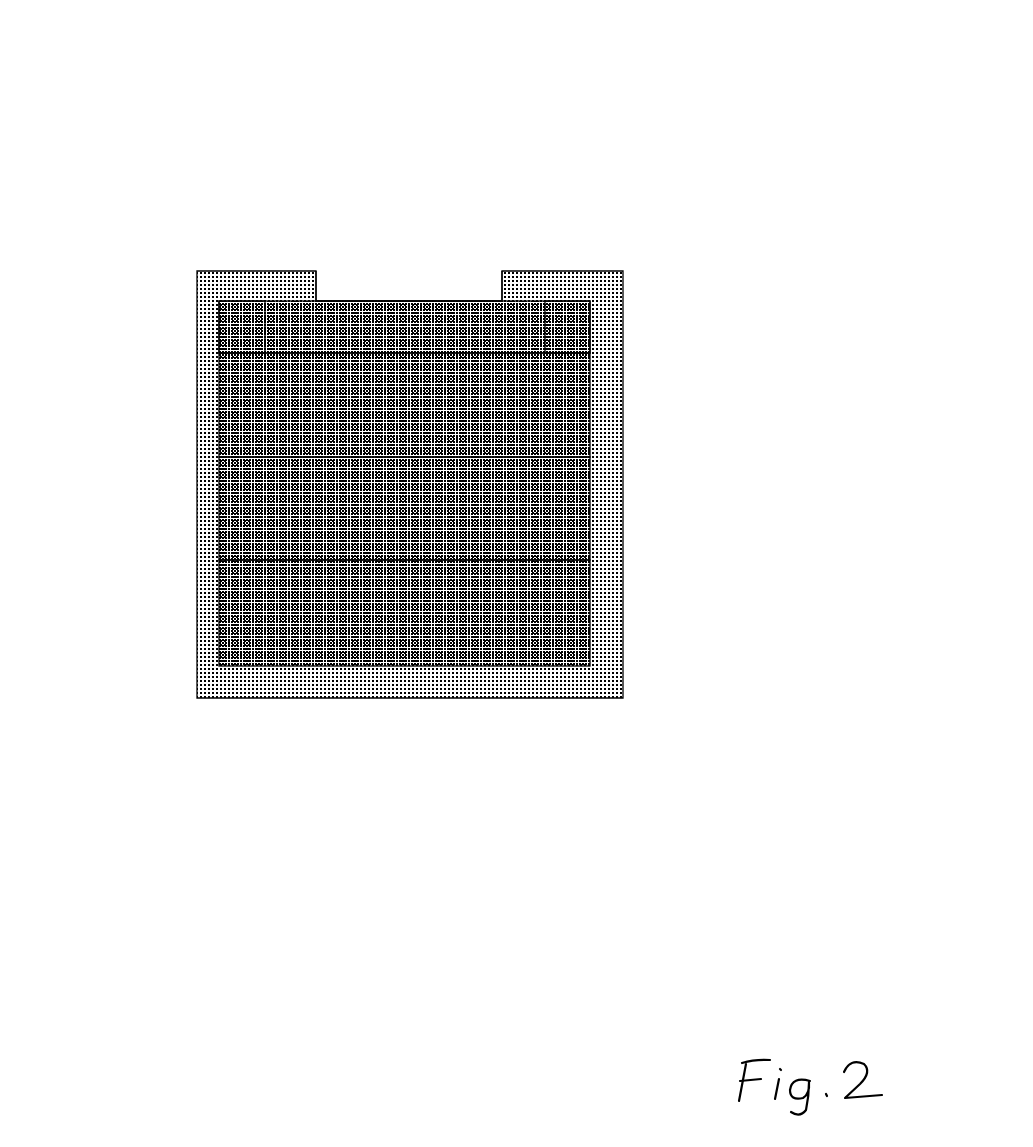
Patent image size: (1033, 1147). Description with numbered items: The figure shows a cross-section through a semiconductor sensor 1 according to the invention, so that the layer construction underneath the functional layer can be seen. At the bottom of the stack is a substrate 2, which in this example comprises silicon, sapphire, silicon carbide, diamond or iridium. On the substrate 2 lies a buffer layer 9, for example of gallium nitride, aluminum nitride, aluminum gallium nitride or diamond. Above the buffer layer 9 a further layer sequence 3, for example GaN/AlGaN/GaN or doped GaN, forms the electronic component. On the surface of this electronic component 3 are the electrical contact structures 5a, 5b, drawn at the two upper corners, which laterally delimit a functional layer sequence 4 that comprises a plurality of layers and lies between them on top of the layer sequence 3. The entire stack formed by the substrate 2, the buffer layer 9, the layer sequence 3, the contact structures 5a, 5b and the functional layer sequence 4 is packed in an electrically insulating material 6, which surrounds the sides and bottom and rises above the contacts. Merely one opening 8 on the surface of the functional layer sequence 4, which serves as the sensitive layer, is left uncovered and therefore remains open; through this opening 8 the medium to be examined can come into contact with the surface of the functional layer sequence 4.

The semiconductor sensor 1 is at (434, 109).
The substrate 2 is at (543, 600).
The layer sequence 3 is at (545, 412).
The functional layer sequence 4 is at (454, 315).
The electrical contact structure 5a is at (250, 322).
The electrical contact structure 5b is at (555, 320).
The electrically insulating material 6 is at (608, 667).
The opening 8 is at (377, 280).
The buffer layer 9 is at (542, 506).